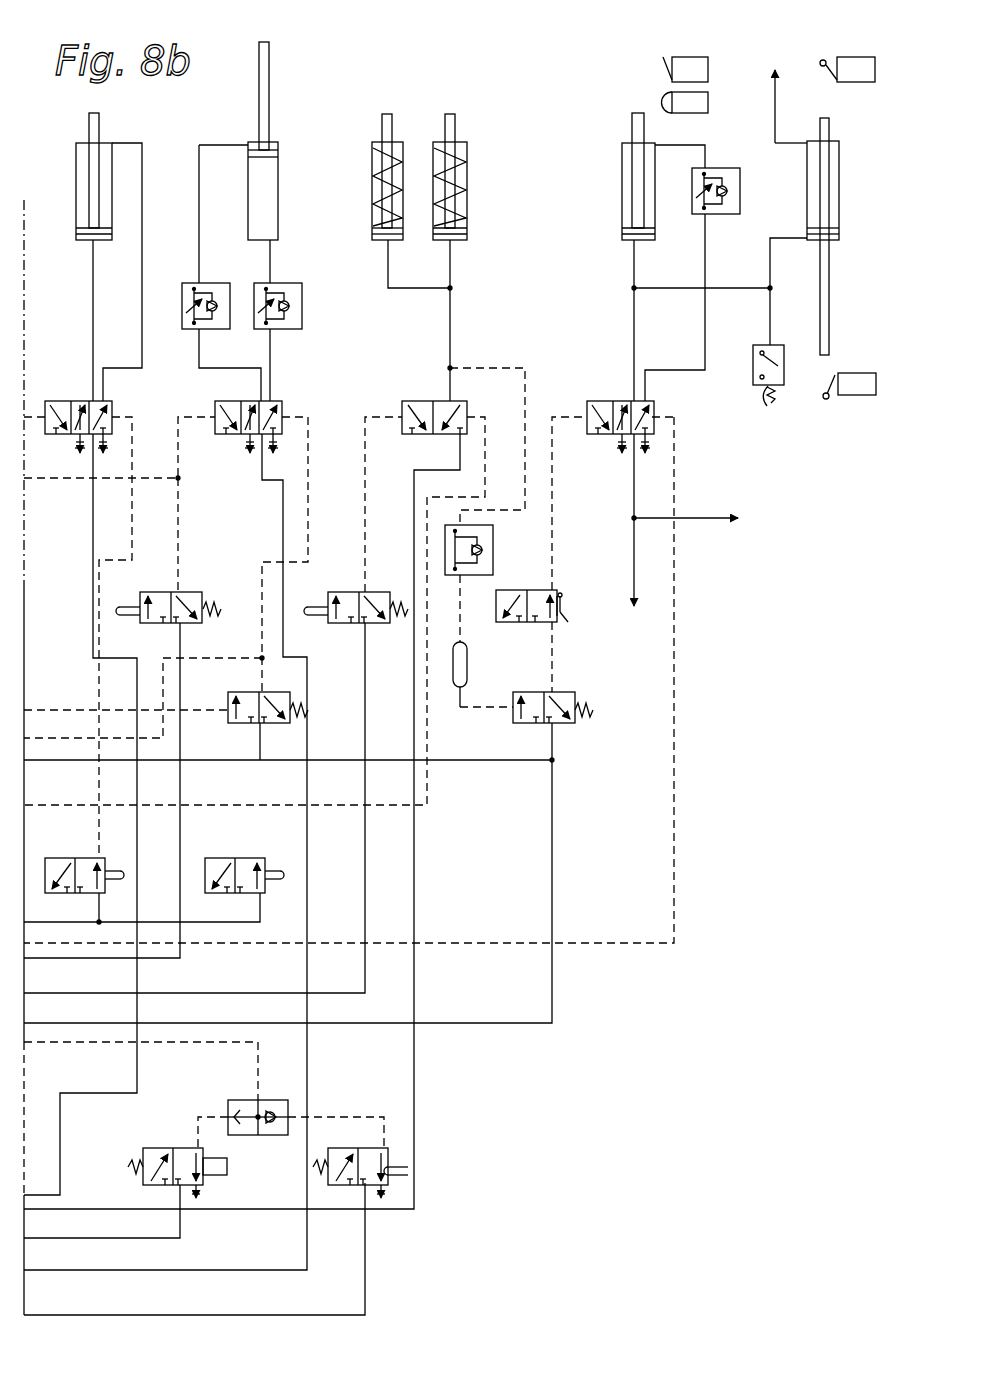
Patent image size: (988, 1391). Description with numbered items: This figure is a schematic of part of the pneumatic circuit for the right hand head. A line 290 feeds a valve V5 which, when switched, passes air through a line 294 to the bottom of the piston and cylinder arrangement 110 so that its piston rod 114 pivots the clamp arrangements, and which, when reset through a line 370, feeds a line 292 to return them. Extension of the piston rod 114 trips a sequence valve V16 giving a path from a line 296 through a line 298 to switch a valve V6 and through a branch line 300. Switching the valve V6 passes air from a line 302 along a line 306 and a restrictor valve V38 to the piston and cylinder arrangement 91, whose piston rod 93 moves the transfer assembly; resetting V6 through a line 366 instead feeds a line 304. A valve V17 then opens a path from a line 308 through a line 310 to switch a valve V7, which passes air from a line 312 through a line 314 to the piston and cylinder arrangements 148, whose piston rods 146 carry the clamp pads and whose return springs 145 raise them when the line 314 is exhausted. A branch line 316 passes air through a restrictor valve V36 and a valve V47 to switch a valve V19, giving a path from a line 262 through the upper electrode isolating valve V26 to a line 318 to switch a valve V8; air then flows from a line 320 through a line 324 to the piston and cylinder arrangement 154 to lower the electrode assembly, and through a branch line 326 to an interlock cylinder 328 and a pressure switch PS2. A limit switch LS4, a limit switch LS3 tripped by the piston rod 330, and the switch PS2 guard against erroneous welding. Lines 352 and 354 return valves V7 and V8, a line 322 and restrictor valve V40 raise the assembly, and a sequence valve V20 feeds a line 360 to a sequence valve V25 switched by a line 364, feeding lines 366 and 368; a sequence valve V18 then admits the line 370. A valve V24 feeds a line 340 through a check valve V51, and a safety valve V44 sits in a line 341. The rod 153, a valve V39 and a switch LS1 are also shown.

The piston and cylinder arrangement 110 is at (73, 141).
The piston rod 114 is at (90, 178).
The piston and cylinder arrangement 91 is at (294, 98).
The piston rod 93 is at (270, 124).
The piston and cylinder arrangements 148 is at (449, 110).
The piston rods 146 is at (447, 135).
The return springs 145 is at (438, 225).
The piston and cylinder arrangement 154 is at (618, 139).
The piston rod 153 is at (623, 198).
The interlock cylinder 328 is at (839, 192).
The piston rod 330 is at (829, 134).
The limit switch LS4 is at (695, 57).
The limit switch LS3 is at (845, 50).
The limit switch LS1 is at (858, 373).
The pressure switch PS2 is at (764, 391).
The sequence valve V20 is at (708, 103).
The restrictor valve V40 is at (720, 162).
The restrictor valve V38 is at (218, 276).
The flow control valve V39 is at (296, 283).
The line 292 is at (142, 244).
The line 306 is at (199, 205).
The line 294 is at (93, 308).
The line 304 is at (270, 366).
The valve V5 is at (60, 401).
The valve V6 is at (225, 401).
The valve V7 is at (420, 401).
The valve V8 is at (607, 401).
The line 370 is at (132, 417).
The branch line 300 is at (160, 497).
The line 298 is at (180, 460).
The line 290 is at (93, 528).
The line 302 is at (283, 536).
The line 314 is at (450, 345).
The branch line 316 is at (497, 368).
The line 310 is at (365, 470).
The line 366 is at (485, 415).
The line 312 is at (430, 470).
The line 352 is at (427, 740).
The restrictor valve V36 is at (493, 550).
The valve V47 is at (468, 655).
The line 318 is at (553, 570).
The upper electrode isolating valve V26 is at (512, 622).
The valve V19 is at (590, 686).
The sequence valve V16 is at (158, 592).
The valve V17 is at (345, 589).
The sequence valve V25 is at (272, 690).
The line 368 is at (262, 658).
The line 364 is at (212, 710).
The line 360 is at (260, 742).
The line 262 is at (488, 762).
The line 296 is at (180, 782).
The sequence valve V18 is at (62, 854).
The line 354 is at (676, 480).
The line 308 is at (112, 993).
The line 320 is at (634, 510).
The line 324 is at (634, 323).
The line 322 is at (705, 340).
The branch line 326 is at (668, 288).
The check valve V51 is at (228, 1108).
The line 340 is at (198, 1117).
The line 341 is at (350, 1117).
The valve V24 is at (143, 1152).
The safety valve V44 is at (404, 1177).